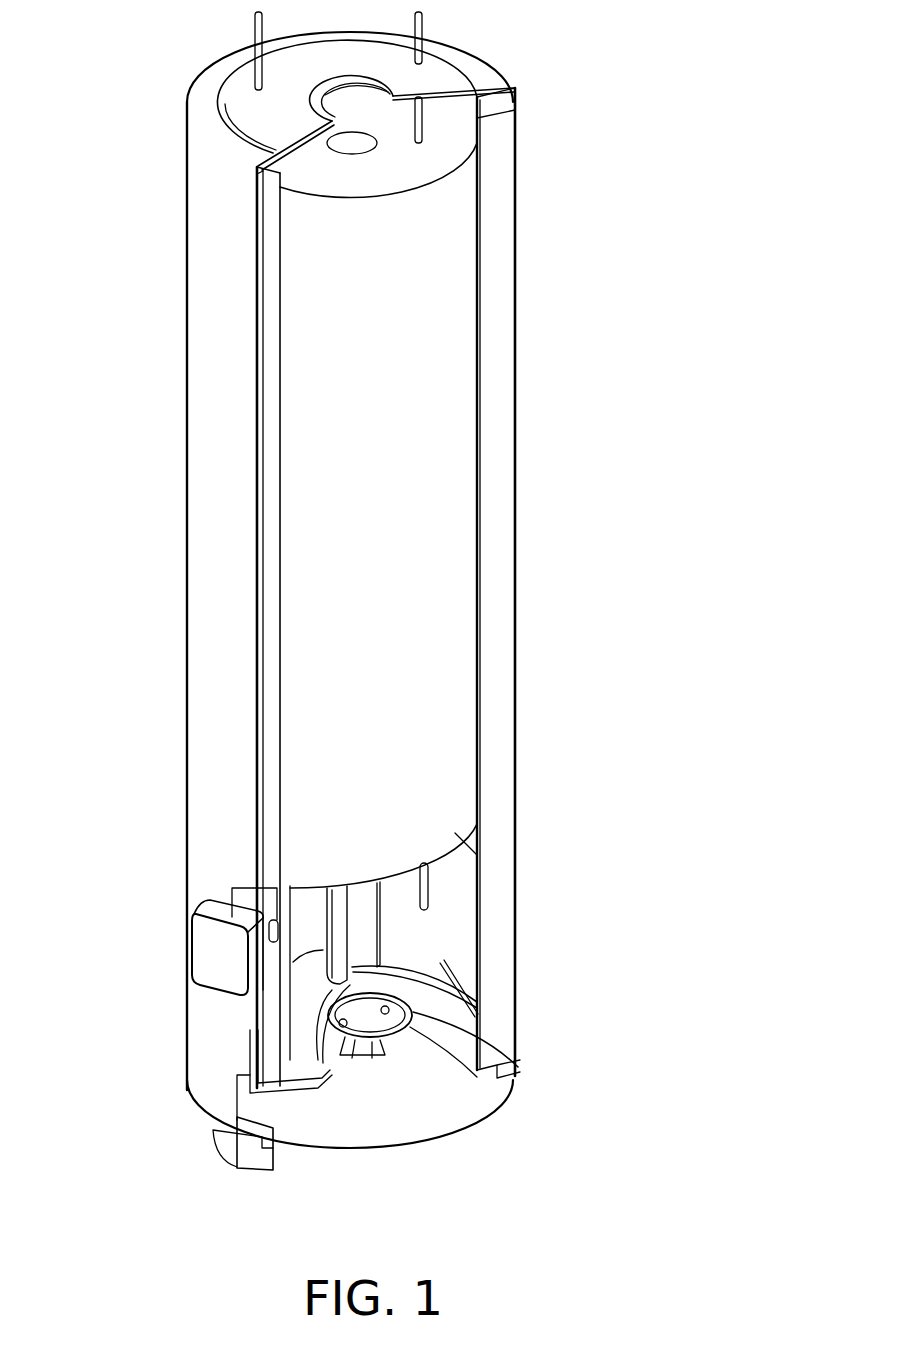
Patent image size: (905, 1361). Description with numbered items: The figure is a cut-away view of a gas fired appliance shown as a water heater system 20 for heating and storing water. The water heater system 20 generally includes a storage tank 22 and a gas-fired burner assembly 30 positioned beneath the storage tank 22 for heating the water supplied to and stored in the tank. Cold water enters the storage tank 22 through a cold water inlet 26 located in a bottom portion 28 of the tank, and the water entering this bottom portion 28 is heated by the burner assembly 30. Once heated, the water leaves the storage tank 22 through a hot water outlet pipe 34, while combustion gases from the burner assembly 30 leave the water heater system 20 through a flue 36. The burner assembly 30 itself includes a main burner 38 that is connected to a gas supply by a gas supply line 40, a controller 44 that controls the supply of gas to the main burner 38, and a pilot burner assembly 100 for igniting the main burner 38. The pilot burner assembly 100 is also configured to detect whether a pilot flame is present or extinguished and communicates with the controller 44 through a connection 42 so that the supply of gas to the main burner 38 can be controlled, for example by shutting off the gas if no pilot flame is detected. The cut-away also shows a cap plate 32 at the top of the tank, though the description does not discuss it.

The water heater system 20 is at (321, 614).
The storage tank 22 is at (452, 843).
The cold water inlet 26 is at (473, 152).
The bottom portion 28 is at (458, 947).
The gas-fired burner assembly 30 is at (363, 1110).
The cap plate 32 is at (452, 238).
The hot water outlet pipe 34 is at (250, 53).
The flue 36 is at (372, 927).
The main burner 38 is at (395, 1022).
The gas supply line 40 is at (303, 1087).
The connection 42 is at (283, 1090).
The controller 44 is at (220, 950).
The pilot burner assembly 100 is at (384, 1056).